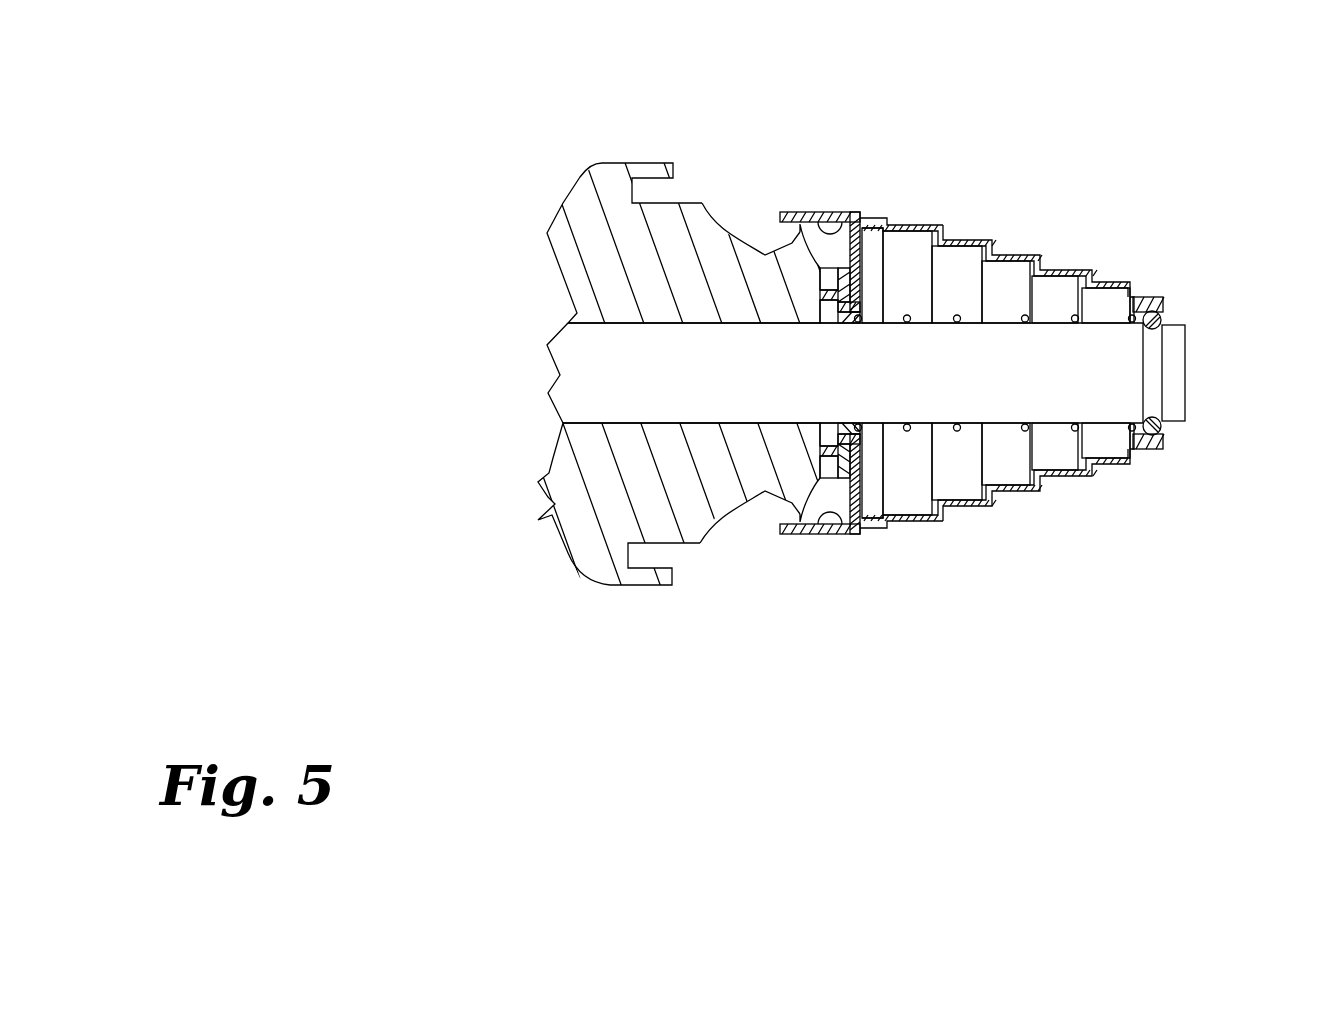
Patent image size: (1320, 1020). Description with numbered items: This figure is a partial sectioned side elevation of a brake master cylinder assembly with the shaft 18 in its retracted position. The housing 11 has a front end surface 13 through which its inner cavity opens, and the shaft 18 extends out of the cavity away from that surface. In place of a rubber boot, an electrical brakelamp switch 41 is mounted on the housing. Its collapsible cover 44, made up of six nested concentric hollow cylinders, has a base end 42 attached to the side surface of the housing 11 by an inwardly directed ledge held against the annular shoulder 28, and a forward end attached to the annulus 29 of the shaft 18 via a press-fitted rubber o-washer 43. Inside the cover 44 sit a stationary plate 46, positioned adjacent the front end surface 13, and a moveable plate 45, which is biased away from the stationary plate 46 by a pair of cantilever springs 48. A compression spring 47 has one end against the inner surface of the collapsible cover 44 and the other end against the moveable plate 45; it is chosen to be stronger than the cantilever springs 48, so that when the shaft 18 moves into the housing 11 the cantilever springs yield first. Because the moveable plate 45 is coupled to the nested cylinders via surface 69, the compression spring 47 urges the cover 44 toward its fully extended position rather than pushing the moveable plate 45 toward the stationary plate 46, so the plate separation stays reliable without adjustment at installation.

The housing 11 is at (673, 203).
The front end surface 13 is at (836, 478).
The shaft 18 is at (1110, 320).
The annular shoulder 28 is at (788, 243).
The annulus 29 is at (1157, 370).
The electrical brakelamp switch 41 is at (992, 220).
The base end 42 is at (846, 222).
The rubber o-washer 43 is at (1157, 437).
The collapsible cover 44 is at (1035, 497).
The moveable plate 45 is at (862, 300).
The stationary plate 46 is at (823, 272).
The compression spring 47 is at (1037, 320).
The cantilever springs 48 is at (848, 280).
The surface 69 is at (880, 527).